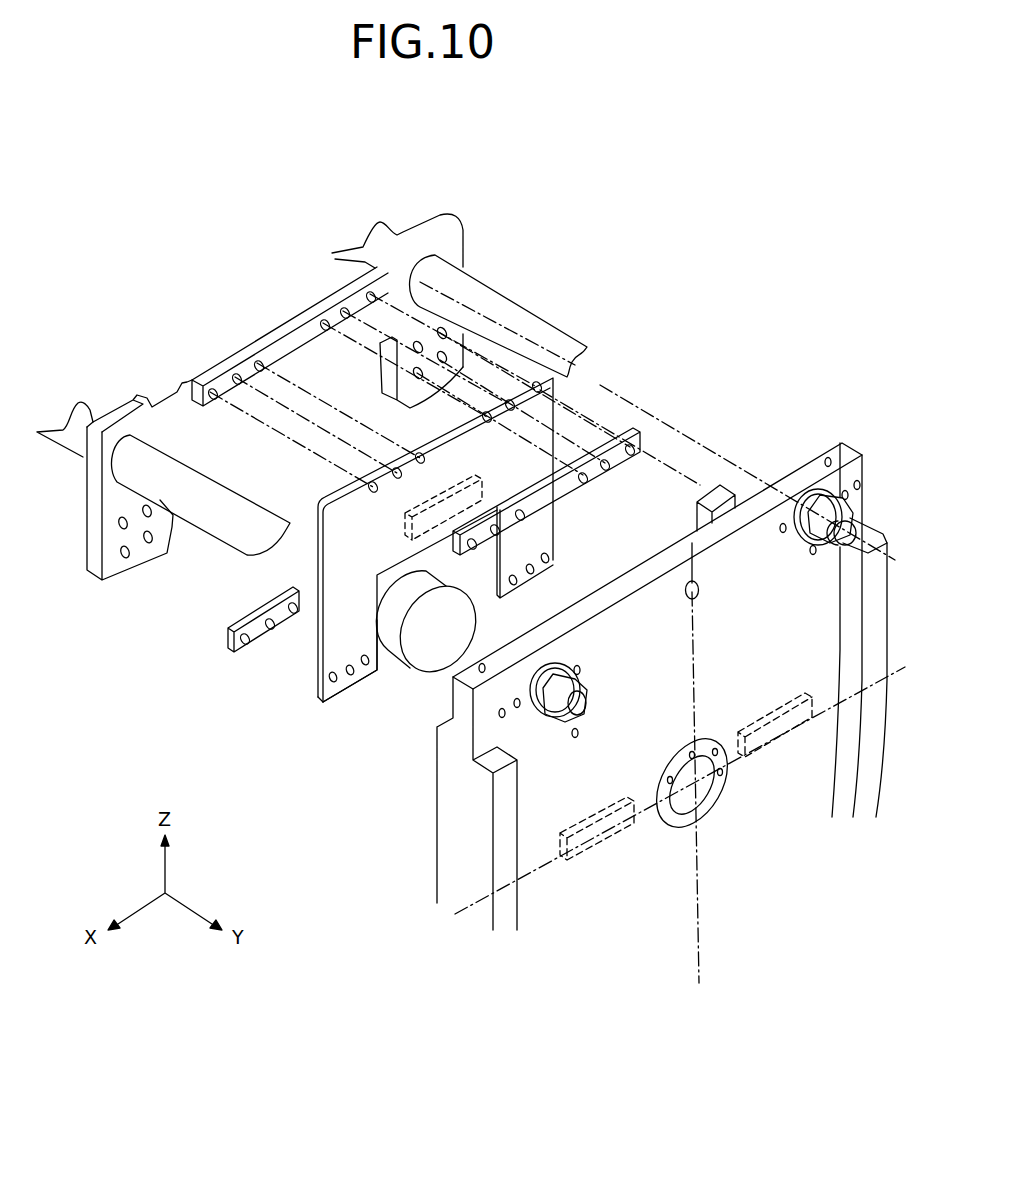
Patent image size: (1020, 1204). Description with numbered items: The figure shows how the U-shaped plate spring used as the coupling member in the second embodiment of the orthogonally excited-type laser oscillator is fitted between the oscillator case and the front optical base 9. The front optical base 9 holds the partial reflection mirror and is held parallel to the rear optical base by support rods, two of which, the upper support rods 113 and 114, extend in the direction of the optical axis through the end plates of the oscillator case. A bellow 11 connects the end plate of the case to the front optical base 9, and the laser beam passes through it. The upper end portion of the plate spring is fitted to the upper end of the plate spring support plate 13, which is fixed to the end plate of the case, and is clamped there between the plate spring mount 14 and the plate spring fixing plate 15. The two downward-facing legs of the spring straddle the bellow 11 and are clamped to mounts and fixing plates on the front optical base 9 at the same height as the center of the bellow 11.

The plate spring support plate 13 is at (458, 212).
The upper support rod 113 is at (203, 533).
The plate spring mount 14 is at (272, 332).
The upper support rod 114 is at (500, 286).
The bellow 11 is at (408, 688).
The plate spring fixing plate 15 is at (642, 447).
The front optical base 9 is at (850, 440).